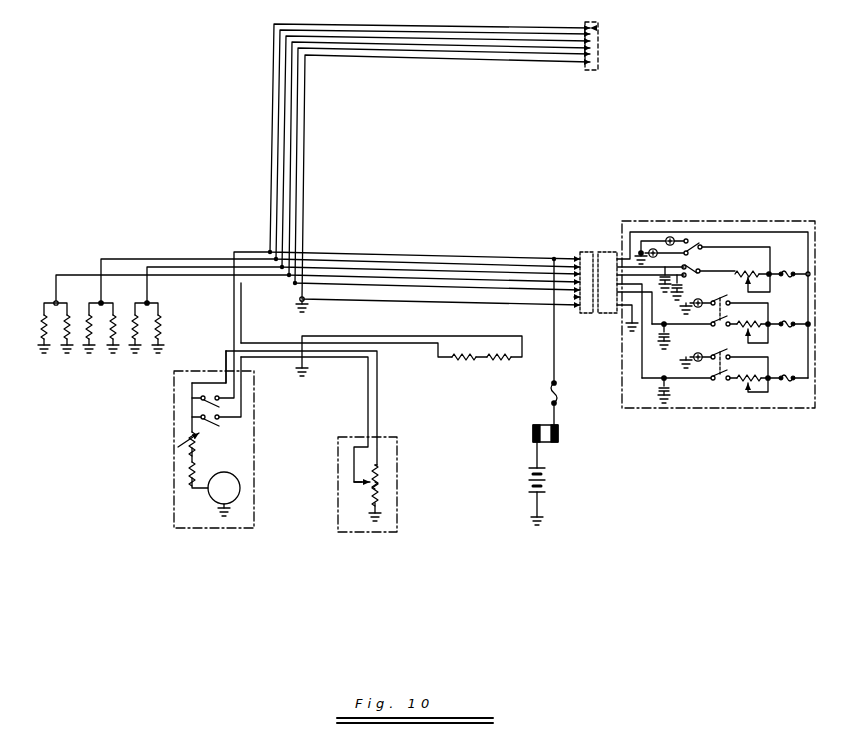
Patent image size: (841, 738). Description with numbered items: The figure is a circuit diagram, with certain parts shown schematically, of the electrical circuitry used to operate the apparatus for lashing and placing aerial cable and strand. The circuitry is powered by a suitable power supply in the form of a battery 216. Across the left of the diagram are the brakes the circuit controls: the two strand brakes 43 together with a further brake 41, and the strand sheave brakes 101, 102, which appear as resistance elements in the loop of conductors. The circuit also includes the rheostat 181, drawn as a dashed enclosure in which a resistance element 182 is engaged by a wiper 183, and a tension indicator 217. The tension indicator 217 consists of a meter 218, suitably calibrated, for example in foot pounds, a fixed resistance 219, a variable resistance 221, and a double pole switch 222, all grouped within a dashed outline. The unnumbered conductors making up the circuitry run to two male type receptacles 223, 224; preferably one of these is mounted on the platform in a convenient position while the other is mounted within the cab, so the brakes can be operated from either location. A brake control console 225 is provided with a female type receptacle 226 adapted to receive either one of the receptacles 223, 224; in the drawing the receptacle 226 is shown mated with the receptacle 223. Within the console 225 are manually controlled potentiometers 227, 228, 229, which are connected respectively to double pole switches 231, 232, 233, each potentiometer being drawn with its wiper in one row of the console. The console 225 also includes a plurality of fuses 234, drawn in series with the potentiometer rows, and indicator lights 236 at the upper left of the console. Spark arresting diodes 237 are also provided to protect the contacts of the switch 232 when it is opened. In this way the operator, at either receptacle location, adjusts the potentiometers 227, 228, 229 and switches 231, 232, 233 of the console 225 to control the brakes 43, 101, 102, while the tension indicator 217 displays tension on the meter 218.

The resistance pair 41 is at (53, 358).
The strand brake 43 is at (100, 358).
The strand sheave brake 101 is at (462, 363).
The strand sheave brake 102 is at (497, 363).
The rheostat 181 is at (380, 484).
The potentiometer 182 is at (382, 473).
The wiper 183 is at (354, 490).
The battery 216 is at (545, 481).
The tension indicator 217 is at (183, 439).
The meter 218 is at (232, 483).
The fixed resistance 219 is at (192, 472).
The variable resistance 221 is at (204, 442).
The double pole switch 222 is at (196, 409).
The male type receptacle 223 is at (583, 251).
The male type receptacle 224 is at (593, 72).
The brake control console 225 is at (697, 408).
The female type receptacle 226 is at (606, 313).
The manually controlled potentiometer 227 is at (758, 264).
The manually controlled potentiometer 228 is at (772, 323).
The manually controlled potentiometer 229 is at (772, 375).
The double pole switch 231 is at (698, 257).
The double pole switch 232 is at (720, 308).
The double pole switch 233 is at (718, 363).
The fuse 234 is at (787, 277).
The indicator light 236 is at (670, 236).
The spark arresting diode 237 is at (686, 280).